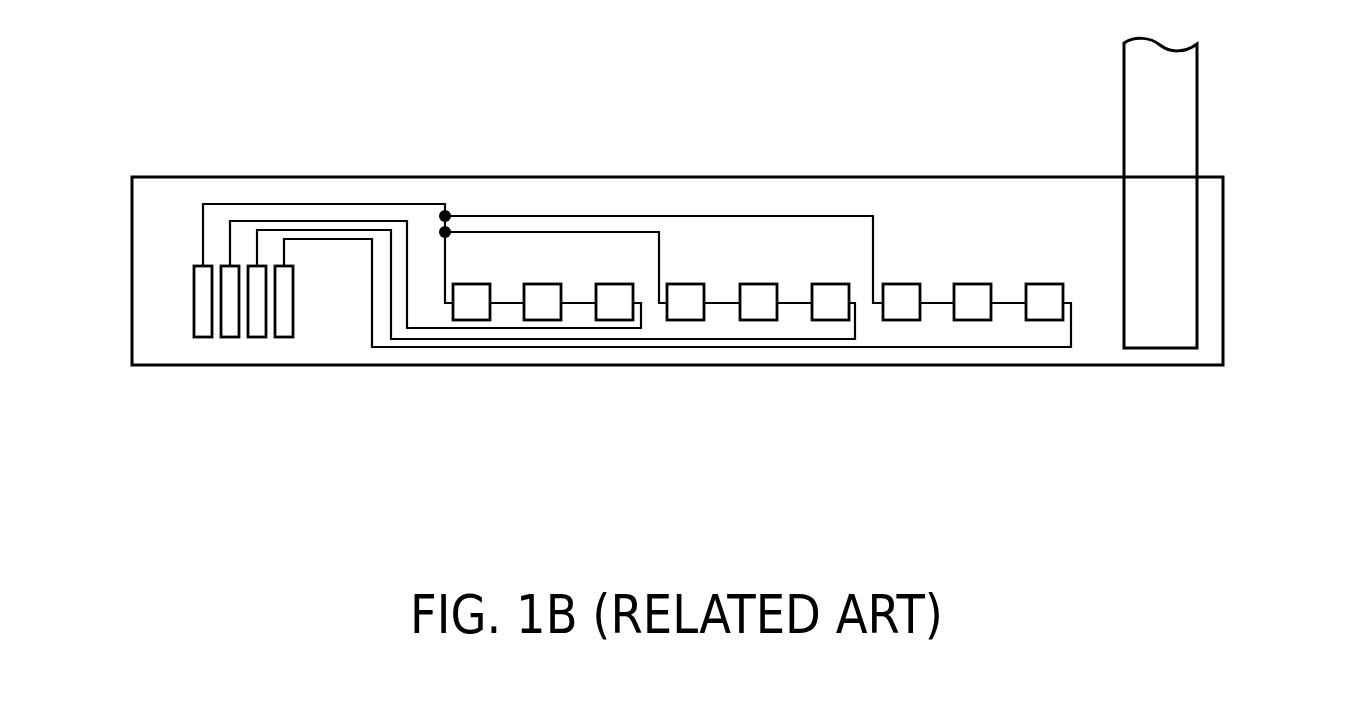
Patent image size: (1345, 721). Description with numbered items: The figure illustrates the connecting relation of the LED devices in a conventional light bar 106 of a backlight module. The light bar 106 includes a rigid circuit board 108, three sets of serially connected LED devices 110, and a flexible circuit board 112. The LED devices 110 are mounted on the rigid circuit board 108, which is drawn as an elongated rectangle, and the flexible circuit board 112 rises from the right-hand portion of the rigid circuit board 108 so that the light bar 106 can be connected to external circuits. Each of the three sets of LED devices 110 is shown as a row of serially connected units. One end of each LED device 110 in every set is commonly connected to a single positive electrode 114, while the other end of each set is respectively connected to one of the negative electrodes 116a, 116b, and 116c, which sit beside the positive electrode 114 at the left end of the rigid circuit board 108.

The light bar 106 is at (706, 259).
The rigid circuit board 108 is at (1098, 347).
The LED devices 110 is at (473, 290).
The flexible circuit board 112 is at (1187, 125).
The positive electrode 114 is at (203, 338).
The negative electrode 116a is at (230, 338).
The negative electrode 116b is at (257, 338).
The negative electrode 116c is at (284, 338).